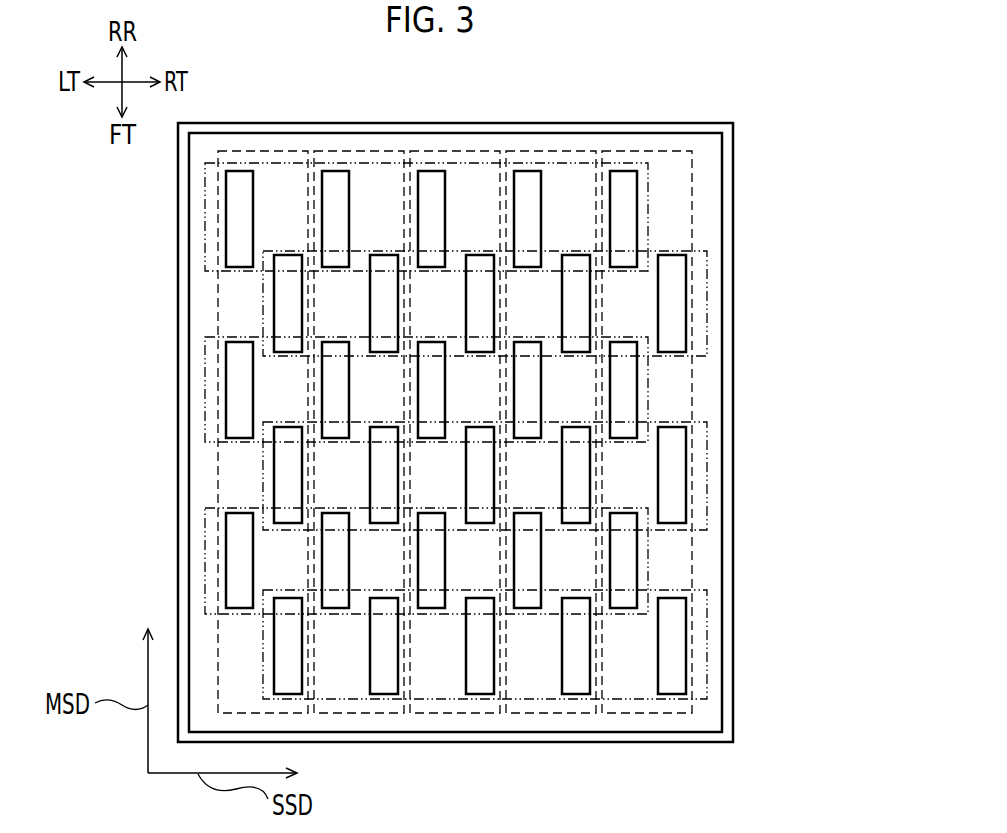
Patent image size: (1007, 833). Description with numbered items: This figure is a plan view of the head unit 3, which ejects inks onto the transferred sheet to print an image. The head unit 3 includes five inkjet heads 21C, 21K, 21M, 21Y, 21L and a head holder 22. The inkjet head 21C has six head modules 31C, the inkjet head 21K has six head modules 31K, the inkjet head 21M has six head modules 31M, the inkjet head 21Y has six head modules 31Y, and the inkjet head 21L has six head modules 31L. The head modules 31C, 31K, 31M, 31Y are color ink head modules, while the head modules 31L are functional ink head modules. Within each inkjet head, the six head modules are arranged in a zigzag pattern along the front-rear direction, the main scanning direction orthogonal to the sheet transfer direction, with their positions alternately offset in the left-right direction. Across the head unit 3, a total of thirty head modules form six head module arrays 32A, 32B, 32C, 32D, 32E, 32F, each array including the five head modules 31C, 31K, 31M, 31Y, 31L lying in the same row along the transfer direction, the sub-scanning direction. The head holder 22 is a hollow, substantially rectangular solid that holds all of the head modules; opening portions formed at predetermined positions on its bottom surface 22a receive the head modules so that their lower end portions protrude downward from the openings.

The head unit 3 is at (700, 104).
The head holder 22 is at (733, 152).
The bottom surface 22a is at (714, 716).
The inkjet head 21C is at (257, 150).
The inkjet head 21K is at (353, 150).
The inkjet head 21M is at (449, 150).
The inkjet head 21Y is at (545, 150).
The inkjet head 21L is at (641, 150).
The head module 31C is at (253, 235).
The head module 31K is at (349, 235).
The head module 31M is at (445, 235).
The head module 31Y is at (541, 235).
The head module 31L is at (658, 282).
The head module array 32A is at (708, 643).
The head module array 32B is at (648, 558).
The head module array 32C is at (707, 470).
The head module array 32D is at (648, 387).
The head module array 32E is at (707, 300).
The head module array 32F is at (648, 216).